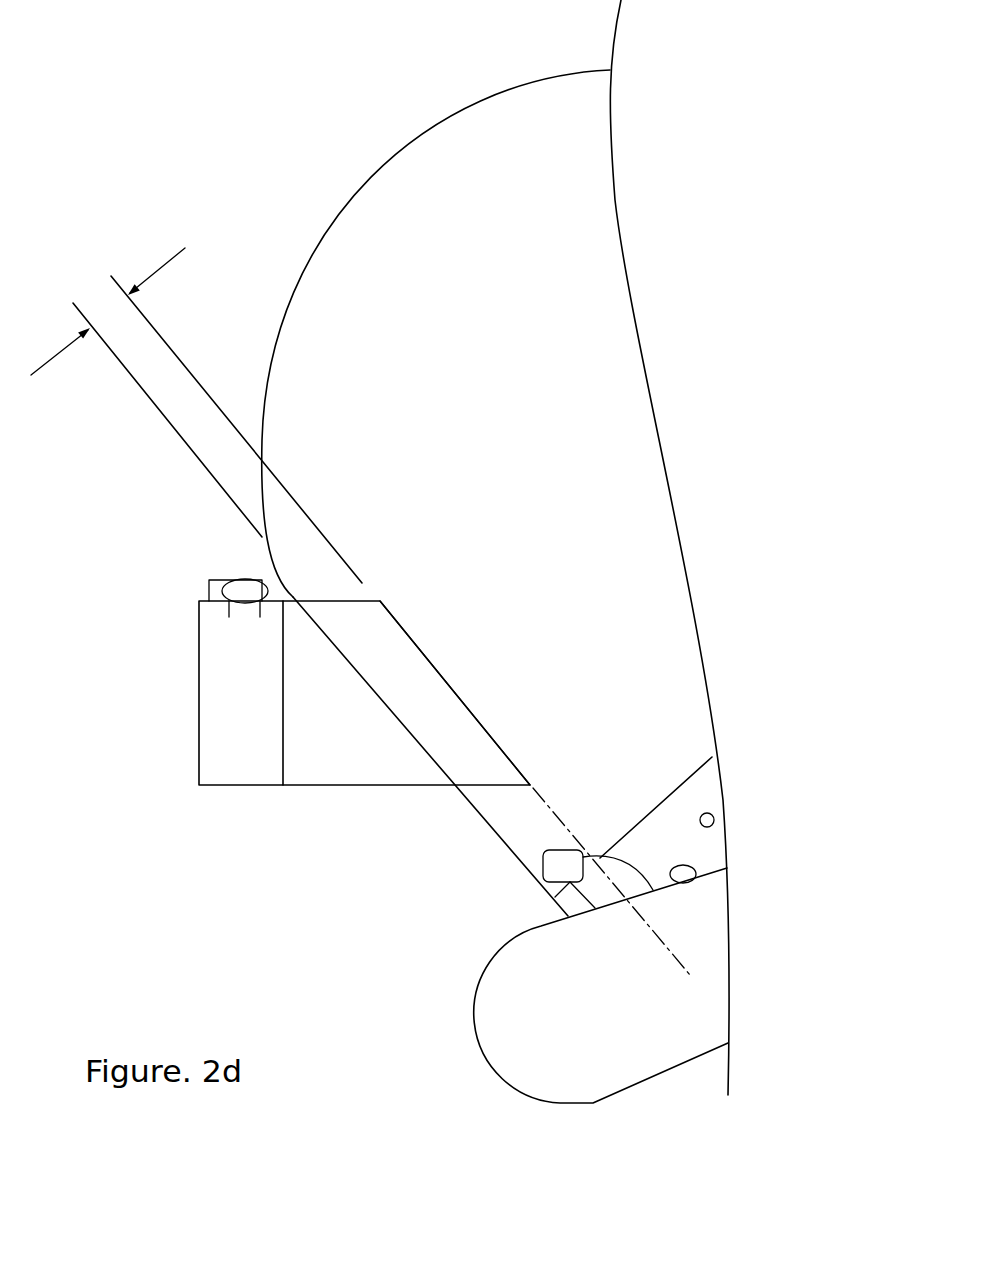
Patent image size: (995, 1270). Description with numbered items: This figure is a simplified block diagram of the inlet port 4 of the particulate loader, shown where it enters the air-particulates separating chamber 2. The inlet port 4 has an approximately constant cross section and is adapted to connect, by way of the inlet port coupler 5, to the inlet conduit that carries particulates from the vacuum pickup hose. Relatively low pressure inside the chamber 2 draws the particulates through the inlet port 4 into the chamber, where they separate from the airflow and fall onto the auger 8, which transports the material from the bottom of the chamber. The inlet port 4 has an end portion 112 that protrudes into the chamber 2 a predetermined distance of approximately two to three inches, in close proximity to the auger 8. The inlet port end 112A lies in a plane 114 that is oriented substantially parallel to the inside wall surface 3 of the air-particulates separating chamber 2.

The air-particulates separating chamber 2 is at (358, 287).
The inside wall surface 3 is at (422, 742).
The inlet port 4 is at (343, 715).
The inlet port coupler 5 is at (232, 712).
The auger 8 is at (663, 842).
The end portion 112 is at (452, 730).
The inlet port end 112A is at (417, 645).
The plane 114 is at (560, 820).